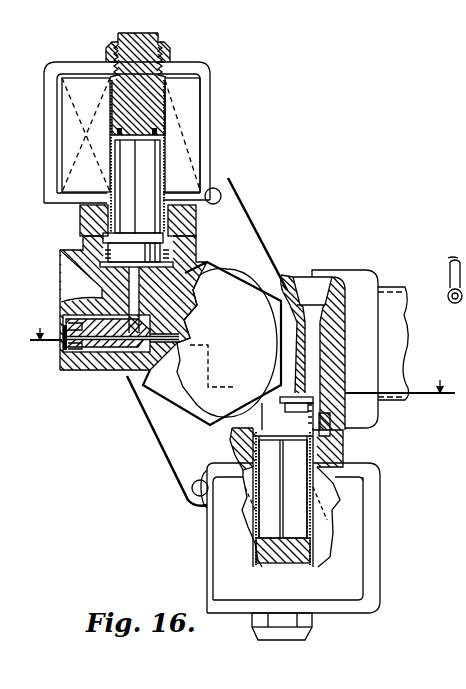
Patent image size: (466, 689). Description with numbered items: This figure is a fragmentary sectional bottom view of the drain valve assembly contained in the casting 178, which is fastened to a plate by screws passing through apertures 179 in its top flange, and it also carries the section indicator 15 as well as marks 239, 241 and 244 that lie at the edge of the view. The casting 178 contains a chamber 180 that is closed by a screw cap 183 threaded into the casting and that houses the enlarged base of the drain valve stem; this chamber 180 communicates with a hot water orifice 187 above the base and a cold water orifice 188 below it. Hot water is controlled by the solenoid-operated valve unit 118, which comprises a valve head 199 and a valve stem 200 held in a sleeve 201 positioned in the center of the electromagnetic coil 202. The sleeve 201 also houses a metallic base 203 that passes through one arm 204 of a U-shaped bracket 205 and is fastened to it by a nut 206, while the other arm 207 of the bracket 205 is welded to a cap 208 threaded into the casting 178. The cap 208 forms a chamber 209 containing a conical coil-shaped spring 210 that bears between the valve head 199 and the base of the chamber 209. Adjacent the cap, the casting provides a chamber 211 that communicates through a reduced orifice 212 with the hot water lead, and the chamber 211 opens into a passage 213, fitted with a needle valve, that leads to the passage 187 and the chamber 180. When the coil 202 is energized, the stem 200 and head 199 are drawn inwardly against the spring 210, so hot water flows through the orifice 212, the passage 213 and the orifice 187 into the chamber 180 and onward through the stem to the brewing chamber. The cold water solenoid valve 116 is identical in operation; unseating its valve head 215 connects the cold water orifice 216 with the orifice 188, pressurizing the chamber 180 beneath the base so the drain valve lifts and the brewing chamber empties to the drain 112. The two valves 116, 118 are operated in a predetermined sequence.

The section line 15- 15 is at (242, 351).
The drain 112 is at (385, 302).
The cold water solenoid valve 116 is at (345, 573).
The solenoid-operated valve unit 118 is at (212, 101).
The casting 178 is at (127, 372).
The apertures 179 is at (222, 196).
The chamber 180 is at (177, 396).
The screw cap 183 is at (156, 432).
The hot water orifice 187 is at (125, 378).
The cold water orifice 188 is at (313, 373).
The valve head 199 is at (195, 263).
The valve stem 200 is at (150, 183).
The sleeve 201 is at (165, 156).
The electromagnetic coil 202 is at (205, 93).
The metallic base 203 is at (198, 70).
The arm 204 is at (157, 94).
The U-shaped bracket 205 is at (46, 80).
The nut 206 is at (168, 45).
The arm 207 is at (63, 205).
The cap 208 is at (207, 222).
The chamber 209 is at (200, 236).
The conical coil-shaped spring 210 is at (78, 249).
The chamber 211 is at (100, 280).
The reduced orifice 212 is at (72, 296).
The passage 213 is at (212, 279).
The valve head 215 is at (343, 450).
The cold water orifice 216 is at (347, 407).
The plunger tube 239 is at (465, 85).
The fitting 241 is at (454, 199).
The connector 244 is at (455, 256).